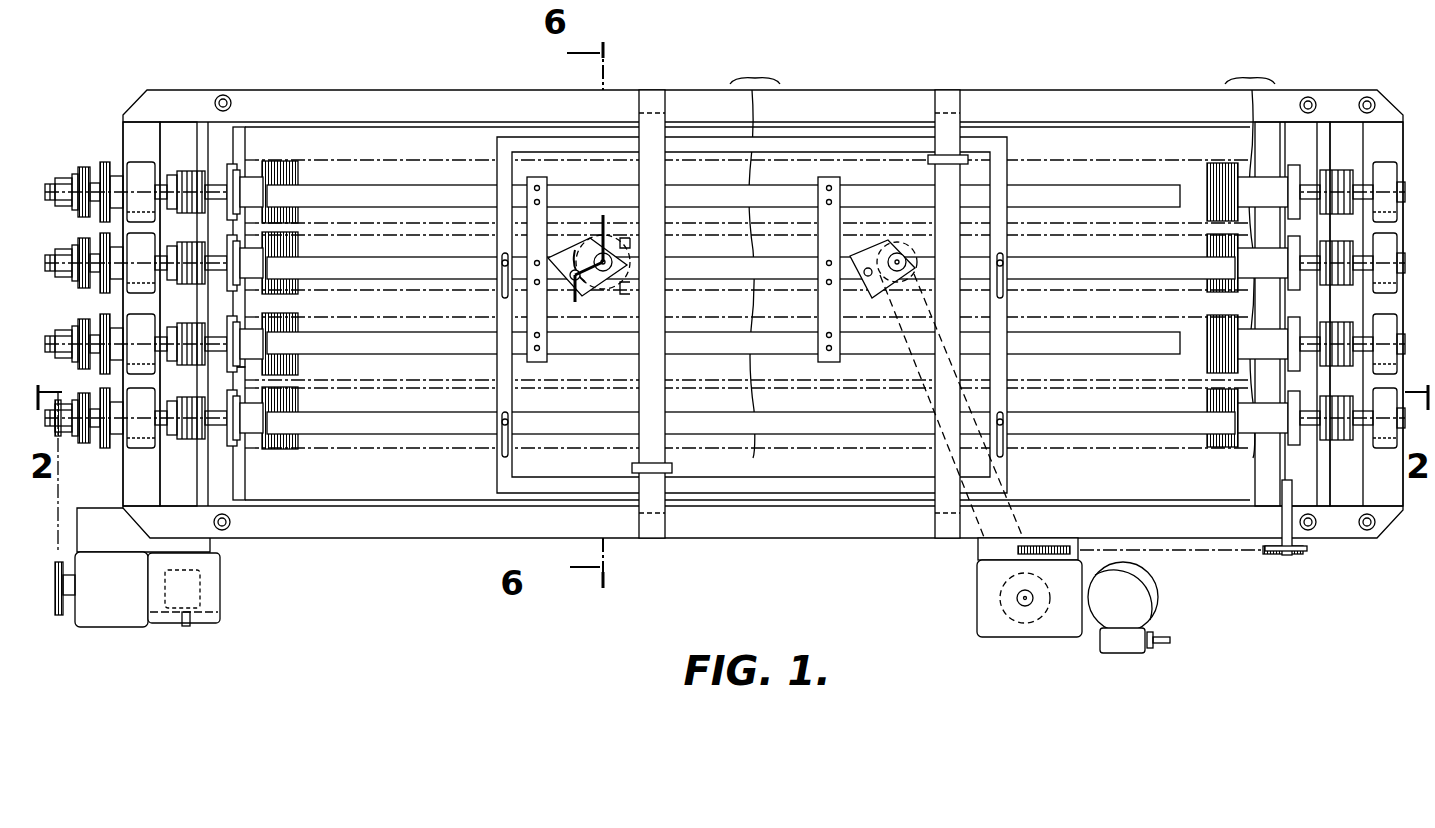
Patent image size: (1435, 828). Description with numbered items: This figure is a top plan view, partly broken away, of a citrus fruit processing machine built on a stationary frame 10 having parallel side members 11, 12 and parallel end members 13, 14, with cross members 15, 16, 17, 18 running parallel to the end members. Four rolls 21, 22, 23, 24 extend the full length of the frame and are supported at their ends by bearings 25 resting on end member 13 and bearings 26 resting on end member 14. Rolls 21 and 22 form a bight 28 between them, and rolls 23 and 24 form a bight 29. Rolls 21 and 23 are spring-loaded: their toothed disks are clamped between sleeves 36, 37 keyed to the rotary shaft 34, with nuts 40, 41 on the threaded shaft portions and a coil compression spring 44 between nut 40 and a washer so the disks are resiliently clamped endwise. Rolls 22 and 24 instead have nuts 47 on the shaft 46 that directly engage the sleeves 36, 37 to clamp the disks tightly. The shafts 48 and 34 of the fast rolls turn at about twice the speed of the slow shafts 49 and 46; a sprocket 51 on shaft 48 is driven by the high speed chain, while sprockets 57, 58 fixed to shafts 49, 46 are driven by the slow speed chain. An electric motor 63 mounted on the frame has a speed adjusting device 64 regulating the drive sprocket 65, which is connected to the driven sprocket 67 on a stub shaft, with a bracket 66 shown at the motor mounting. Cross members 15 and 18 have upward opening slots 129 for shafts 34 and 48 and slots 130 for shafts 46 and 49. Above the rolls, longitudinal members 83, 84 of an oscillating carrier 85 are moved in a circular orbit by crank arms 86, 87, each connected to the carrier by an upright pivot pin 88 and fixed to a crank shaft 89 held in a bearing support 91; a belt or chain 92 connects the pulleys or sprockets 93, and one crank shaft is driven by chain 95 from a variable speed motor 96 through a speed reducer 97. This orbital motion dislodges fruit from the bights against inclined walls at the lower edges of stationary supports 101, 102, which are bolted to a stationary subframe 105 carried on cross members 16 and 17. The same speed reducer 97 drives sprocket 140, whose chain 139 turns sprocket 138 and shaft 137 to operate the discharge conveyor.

The stationary frame 10 is at (428, 88).
The side member 11 is at (503, 100).
The side member 12 is at (385, 522).
The end member 13 is at (133, 135).
The end member 14 is at (1378, 135).
The cross member 15 is at (215, 135).
The cross member 16 is at (655, 100).
The cross member 17 is at (950, 98).
The cross member 18 is at (1292, 135).
The roll 21 is at (285, 160).
The roll 22 is at (286, 290).
The roll 23 is at (300, 325).
The roll 24 is at (298, 438).
The bearings 25 is at (143, 168).
The bearings 26 is at (1378, 170).
The bight 28 is at (365, 225).
The bight 29 is at (415, 384).
The rotary shaft 34 is at (64, 326).
The sleeve 36 is at (250, 182).
The sleeve 37 is at (1292, 185).
The nut 40 is at (172, 176).
The nut 41 is at (1347, 214).
The coil compression spring 44 is at (190, 214).
The shaft 46 is at (165, 428).
The nuts 47 is at (200, 440).
The shaft 48 is at (62, 178).
The shaft 49 is at (60, 249).
The sprocket 51 is at (105, 162).
The sprocket 57 is at (78, 280).
The sprocket 58 is at (82, 440).
The electric motor 63 is at (126, 605).
The speed adjusting device 64 is at (190, 592).
The drive sprocket 65 is at (60, 615).
The bracket 66 is at (65, 538).
The driven sprocket 67 is at (62, 445).
The longitudinal member 83 is at (378, 190).
The longitudinal member 84 is at (342, 340).
The oscillating carrier 85 is at (835, 175).
The crank arm 86 is at (566, 300).
The crank arm 87 is at (860, 285).
The upright pivot pin 88 is at (565, 268).
The crank shaft 89 is at (610, 252).
The bearing support 91 is at (640, 260).
The belt or chain 92 is at (695, 235).
The pulley or sprocket 93 is at (900, 283).
The chain 95 is at (968, 530).
The variable speed motor 96 is at (1145, 592).
The speed reducer 97 is at (1057, 622).
The stationary support 101 is at (348, 262).
The stationary support 102 is at (405, 430).
The stationary subframe 105 is at (998, 140).
The upward opening slot 129 is at (240, 130).
The upward opening slot 130 is at (245, 460).
The shaft 137 is at (1308, 549).
The sprocket 138 is at (1288, 556).
The chain 139 is at (1190, 552).
The sprocket 140 is at (1057, 546).